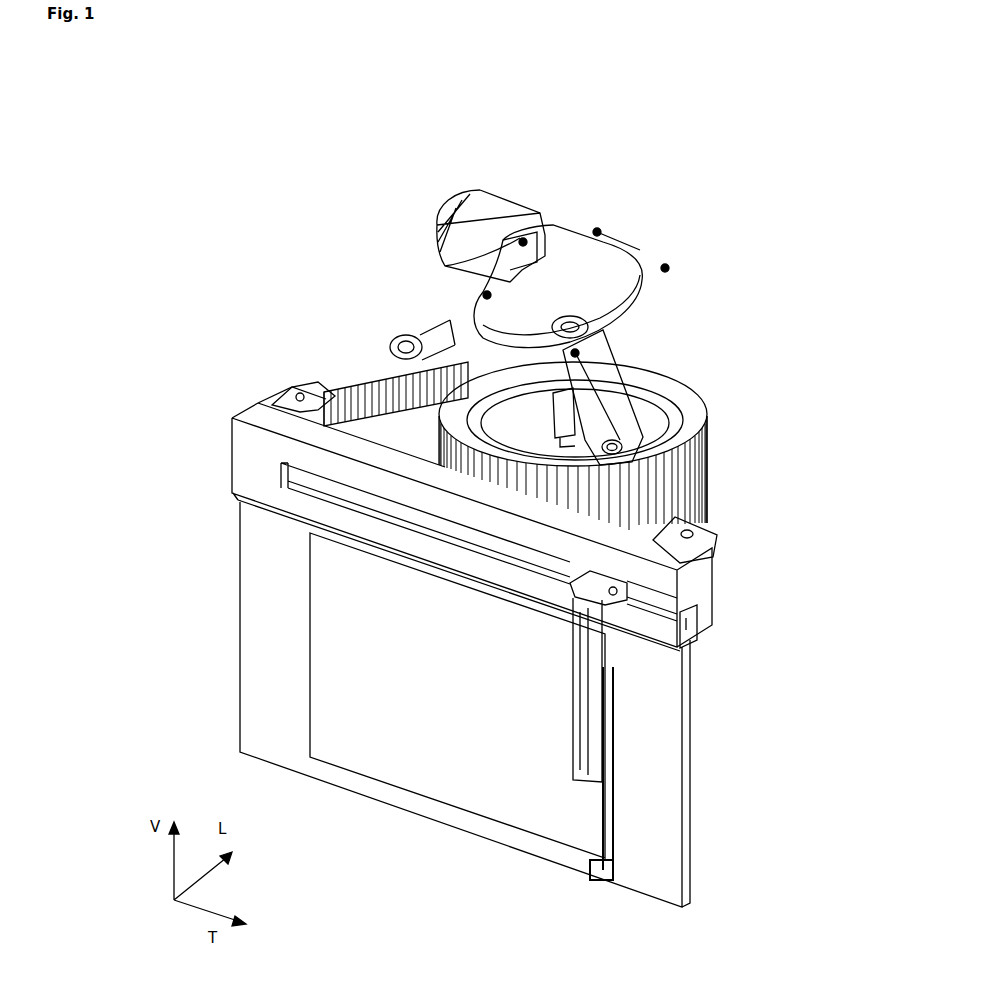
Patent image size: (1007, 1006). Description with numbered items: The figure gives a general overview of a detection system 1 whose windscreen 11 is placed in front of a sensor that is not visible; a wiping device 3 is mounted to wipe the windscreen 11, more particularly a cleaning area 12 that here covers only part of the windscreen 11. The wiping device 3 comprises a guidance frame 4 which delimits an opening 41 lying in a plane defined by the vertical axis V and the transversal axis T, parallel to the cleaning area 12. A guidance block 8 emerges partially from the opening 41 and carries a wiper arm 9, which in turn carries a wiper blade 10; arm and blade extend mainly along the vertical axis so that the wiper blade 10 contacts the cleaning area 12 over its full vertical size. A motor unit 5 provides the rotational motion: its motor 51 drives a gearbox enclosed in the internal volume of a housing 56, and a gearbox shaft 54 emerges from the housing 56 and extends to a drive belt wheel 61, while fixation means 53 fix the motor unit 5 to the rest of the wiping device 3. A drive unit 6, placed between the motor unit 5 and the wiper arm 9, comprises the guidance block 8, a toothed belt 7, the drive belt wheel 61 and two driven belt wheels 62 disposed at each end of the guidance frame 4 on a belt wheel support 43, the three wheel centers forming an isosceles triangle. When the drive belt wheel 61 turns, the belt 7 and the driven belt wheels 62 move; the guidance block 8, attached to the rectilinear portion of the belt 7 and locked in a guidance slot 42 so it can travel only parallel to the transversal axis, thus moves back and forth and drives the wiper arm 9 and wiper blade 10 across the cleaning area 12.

The detection system 1 is at (242, 182).
The wiping device 3 is at (181, 418).
The guidance frame 4 is at (250, 458).
The motor unit 5 is at (693, 294).
The drive unit 6 is at (808, 338).
The belt 7 is at (703, 448).
The guidance block 8 is at (703, 526).
The wiper arm 9 is at (580, 640).
The wiper blade 10 is at (610, 717).
The windscreen 11 is at (270, 624).
The cleaning area 12 is at (347, 677).
The opening 41 is at (310, 480).
The guidance slot 42 is at (683, 624).
The belt wheel support 43 is at (284, 402).
The motor 51 is at (502, 220).
The fixation means 53 is at (425, 357).
The gearbox shaft 54 is at (567, 420).
The housing 56 is at (595, 293).
The drive belt wheel 61 is at (677, 417).
The driven belt wheel 62 is at (710, 548).